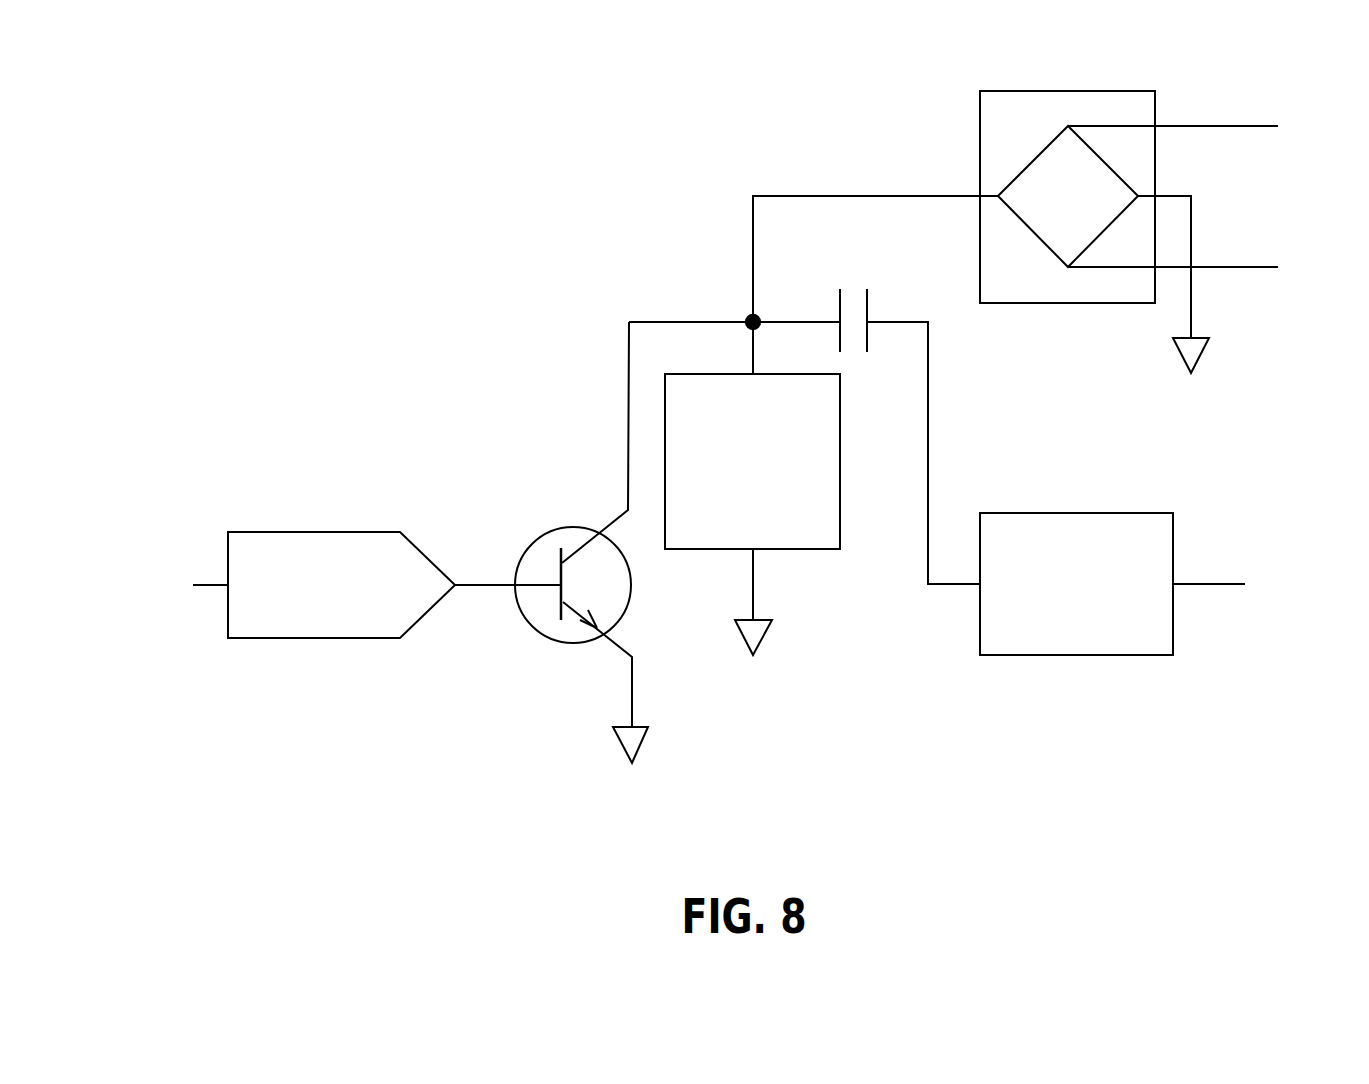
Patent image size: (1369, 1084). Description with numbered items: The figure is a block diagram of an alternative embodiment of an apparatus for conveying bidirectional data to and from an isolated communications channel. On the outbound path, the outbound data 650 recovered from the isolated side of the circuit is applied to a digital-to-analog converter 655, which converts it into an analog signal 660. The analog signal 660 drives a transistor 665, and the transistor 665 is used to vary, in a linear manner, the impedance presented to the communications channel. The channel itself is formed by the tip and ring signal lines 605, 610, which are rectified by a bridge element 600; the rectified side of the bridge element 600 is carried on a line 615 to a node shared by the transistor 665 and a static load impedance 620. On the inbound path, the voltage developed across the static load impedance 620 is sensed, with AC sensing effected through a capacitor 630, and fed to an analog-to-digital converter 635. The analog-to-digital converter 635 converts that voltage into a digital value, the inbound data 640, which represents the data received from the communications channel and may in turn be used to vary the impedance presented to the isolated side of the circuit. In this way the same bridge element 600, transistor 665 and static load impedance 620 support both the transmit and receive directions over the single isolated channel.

The bridge element 600 is at (980, 122).
The tip signal line 605 is at (1234, 124).
The ring signal line 610 is at (1234, 265).
The connection line 615 is at (812, 195).
The static load impedance 620 is at (841, 456).
The capacitor 630 is at (870, 298).
The analog-to-digital converter 635 is at (1075, 512).
The inbound data 640 is at (1207, 582).
The outbound data 650 is at (210, 587).
The digital-to-analog converter 655 is at (319, 530).
The analog signal 660 is at (487, 587).
The transistor 665 is at (572, 526).